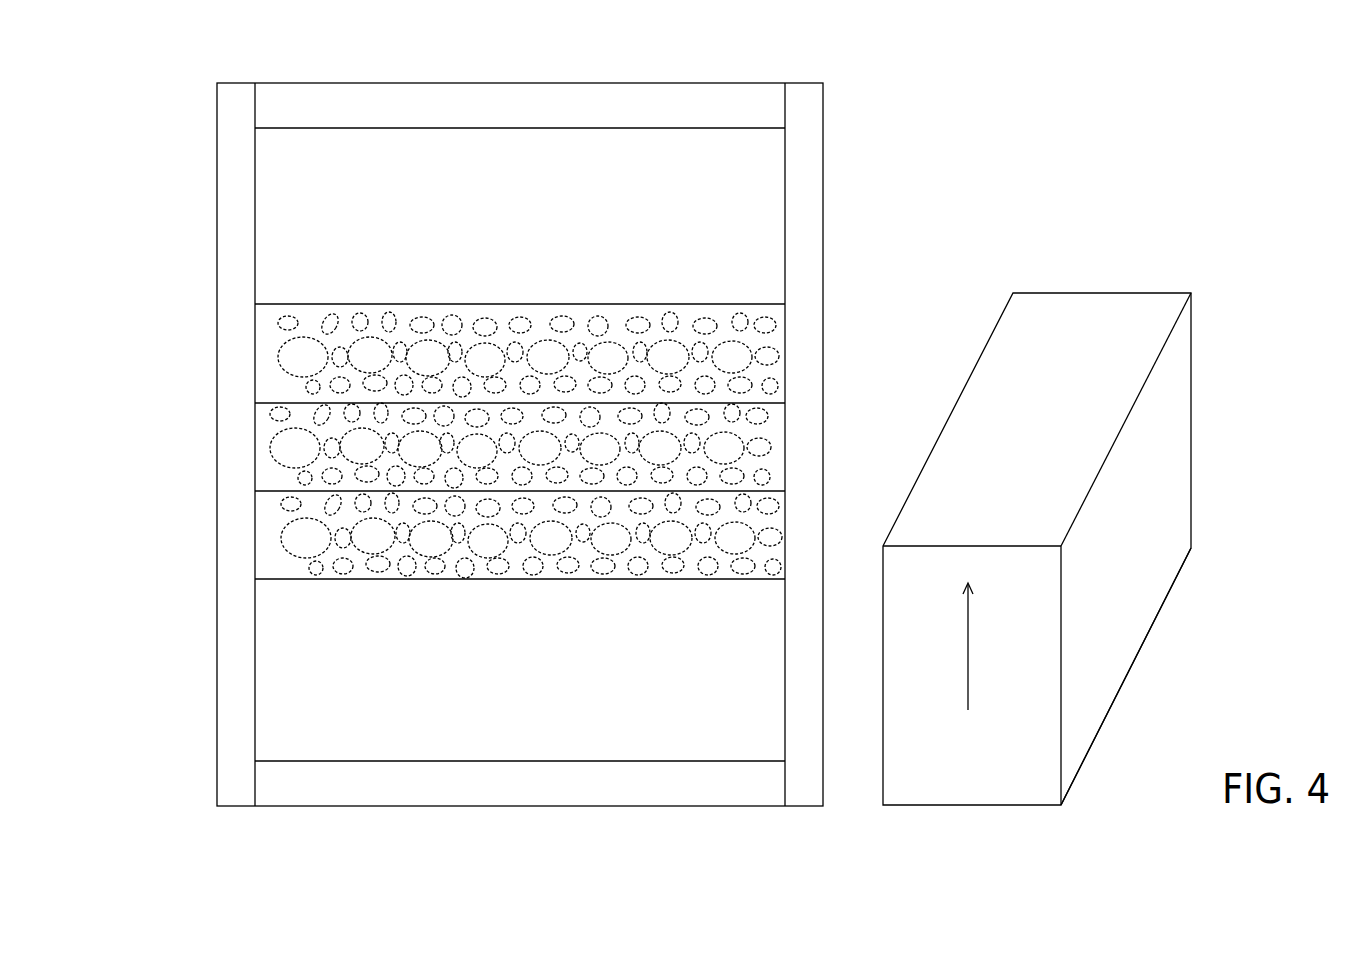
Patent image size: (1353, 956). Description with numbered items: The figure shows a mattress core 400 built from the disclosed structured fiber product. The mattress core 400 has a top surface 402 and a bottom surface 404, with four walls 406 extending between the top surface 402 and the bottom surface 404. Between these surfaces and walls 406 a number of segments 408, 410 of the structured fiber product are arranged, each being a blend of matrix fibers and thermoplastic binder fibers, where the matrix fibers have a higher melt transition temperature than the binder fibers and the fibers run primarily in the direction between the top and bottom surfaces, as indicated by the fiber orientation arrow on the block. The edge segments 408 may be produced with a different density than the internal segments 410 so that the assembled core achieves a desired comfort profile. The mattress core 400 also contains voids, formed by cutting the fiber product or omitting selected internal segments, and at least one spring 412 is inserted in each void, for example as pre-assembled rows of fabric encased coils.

The mattress core 400 is at (726, 69).
The top surface 402 is at (1099, 306).
The bottom surface 404 is at (1141, 656).
The walls 406 is at (593, 83).
The edge segments 408 is at (348, 95).
The internal segments 410 is at (763, 170).
The spring 412 is at (770, 372).